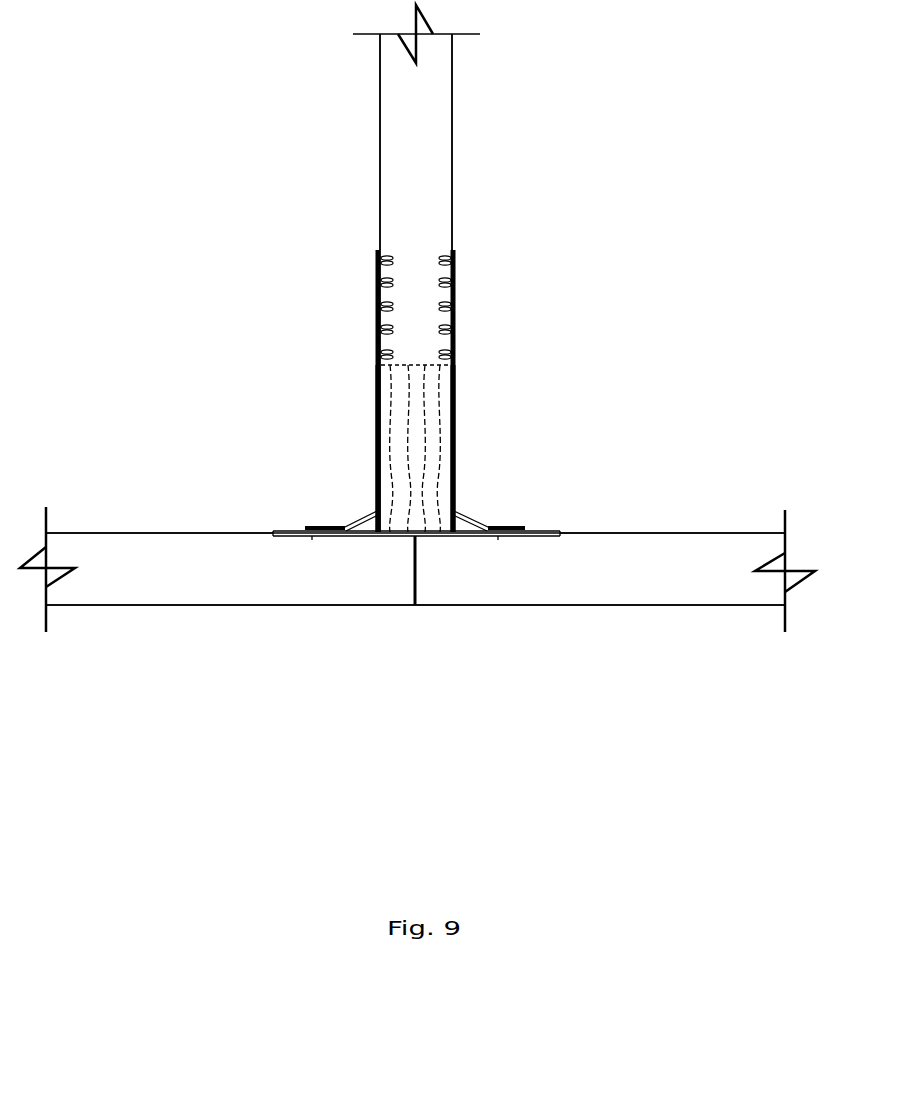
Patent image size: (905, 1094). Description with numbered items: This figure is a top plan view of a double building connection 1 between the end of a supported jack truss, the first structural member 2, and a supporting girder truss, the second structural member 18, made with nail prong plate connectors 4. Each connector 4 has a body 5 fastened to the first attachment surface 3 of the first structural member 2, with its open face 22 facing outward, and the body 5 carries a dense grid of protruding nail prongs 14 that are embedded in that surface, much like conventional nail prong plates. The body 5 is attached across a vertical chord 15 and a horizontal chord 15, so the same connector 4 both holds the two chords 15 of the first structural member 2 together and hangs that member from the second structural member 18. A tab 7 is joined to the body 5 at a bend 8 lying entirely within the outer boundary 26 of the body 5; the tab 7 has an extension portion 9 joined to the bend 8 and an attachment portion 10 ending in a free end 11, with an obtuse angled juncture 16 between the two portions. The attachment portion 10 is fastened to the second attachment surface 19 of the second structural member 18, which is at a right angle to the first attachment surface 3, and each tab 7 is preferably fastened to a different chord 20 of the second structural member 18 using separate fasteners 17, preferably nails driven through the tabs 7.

The building connection 1 is at (368, 508).
The first structural member 2 is at (453, 72).
The first attachment surface 3 is at (380, 70).
The nail prong plate connector 4 is at (377, 412).
The body 5 is at (377, 268).
The first tab 7 is at (348, 524).
The first bend 8 is at (344, 476).
The first tab extension portion 9 is at (358, 520).
The first tab attachment portion 10 is at (305, 530).
The first free end 11 is at (278, 533).
The nail prongs 14 is at (392, 262).
The chord 15 is at (452, 153).
The obtuse angled juncture 16 is at (325, 527).
The separate fasteners 17 is at (312, 537).
The second structural member 18 is at (648, 604).
The second attachment surface 19 is at (133, 533).
The chord 20 is at (173, 605).
The open face 22 is at (378, 380).
The outer boundary 26 is at (365, 537).